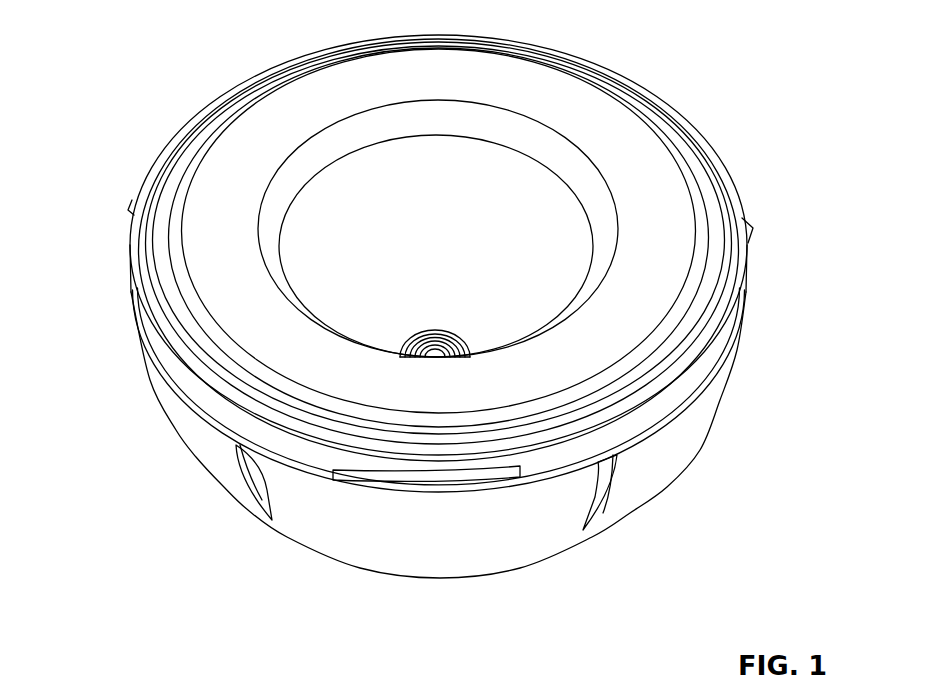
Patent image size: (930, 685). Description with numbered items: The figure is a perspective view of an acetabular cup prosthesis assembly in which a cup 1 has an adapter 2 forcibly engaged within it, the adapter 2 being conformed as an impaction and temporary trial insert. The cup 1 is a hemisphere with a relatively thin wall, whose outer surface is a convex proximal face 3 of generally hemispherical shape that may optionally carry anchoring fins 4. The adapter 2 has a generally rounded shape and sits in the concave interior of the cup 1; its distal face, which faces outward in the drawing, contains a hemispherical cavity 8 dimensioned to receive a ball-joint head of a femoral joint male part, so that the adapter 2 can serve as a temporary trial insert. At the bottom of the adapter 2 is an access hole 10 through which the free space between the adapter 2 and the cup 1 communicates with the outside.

The cup 1 is at (308, 517).
The adapter 2 is at (660, 197).
The convex proximal face 3 is at (515, 548).
The anchoring fins 4 is at (607, 490).
The hemispherical cavity 8 is at (342, 222).
The access hole 10 is at (410, 341).